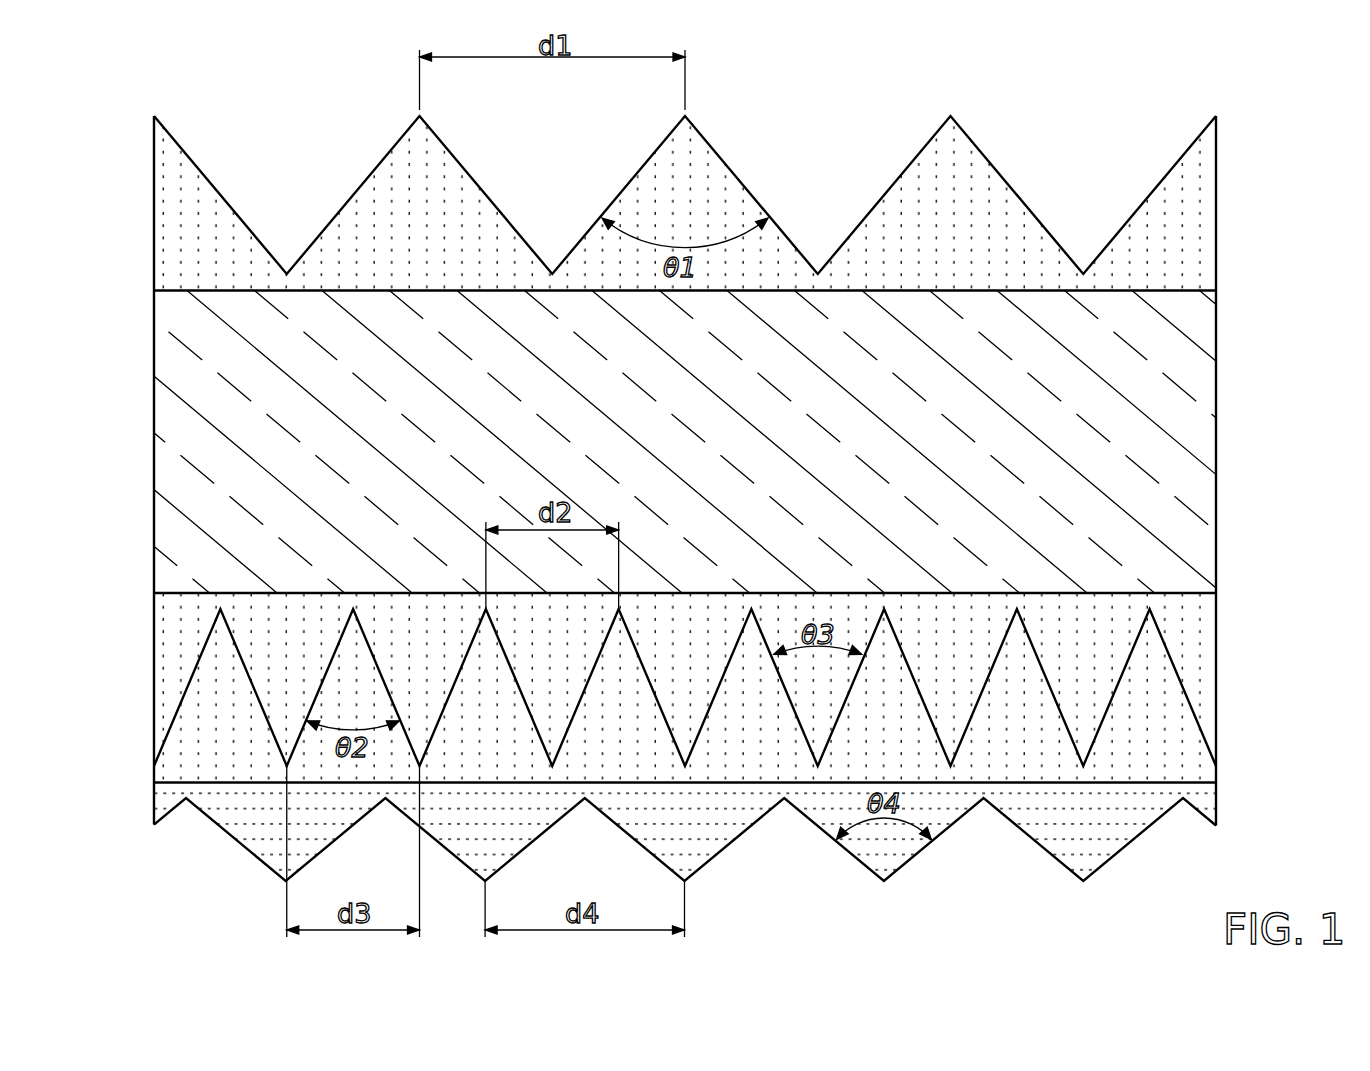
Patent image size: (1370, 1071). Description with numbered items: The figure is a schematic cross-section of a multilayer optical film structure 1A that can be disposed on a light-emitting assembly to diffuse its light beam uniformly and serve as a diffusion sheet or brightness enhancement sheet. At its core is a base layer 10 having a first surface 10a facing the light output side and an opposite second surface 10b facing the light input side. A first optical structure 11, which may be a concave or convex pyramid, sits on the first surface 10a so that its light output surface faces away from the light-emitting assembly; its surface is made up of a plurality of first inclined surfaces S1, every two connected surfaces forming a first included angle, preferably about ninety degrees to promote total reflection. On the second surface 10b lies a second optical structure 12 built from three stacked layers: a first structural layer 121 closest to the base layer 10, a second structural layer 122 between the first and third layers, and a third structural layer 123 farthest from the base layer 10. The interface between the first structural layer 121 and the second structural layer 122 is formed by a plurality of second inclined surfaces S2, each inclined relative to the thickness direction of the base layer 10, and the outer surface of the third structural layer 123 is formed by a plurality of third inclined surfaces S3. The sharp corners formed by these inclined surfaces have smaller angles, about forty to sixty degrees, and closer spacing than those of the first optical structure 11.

The multilayer optical film structure 1A is at (685, 476).
The base layer 10 is at (685, 442).
The first surface 10a is at (1181, 279).
The second surface 10b is at (1196, 606).
The first optical structure 11 is at (720, 203).
The second optical structure 12 is at (755, 759).
The first structural layer 121 is at (732, 688).
The second structural layer 122 is at (1154, 742).
The third structural layer 123 is at (732, 854).
The first inclined surfaces S1 is at (883, 179).
The second inclined surfaces S2 is at (1067, 693).
The third inclined surfaces S3 is at (1031, 858).